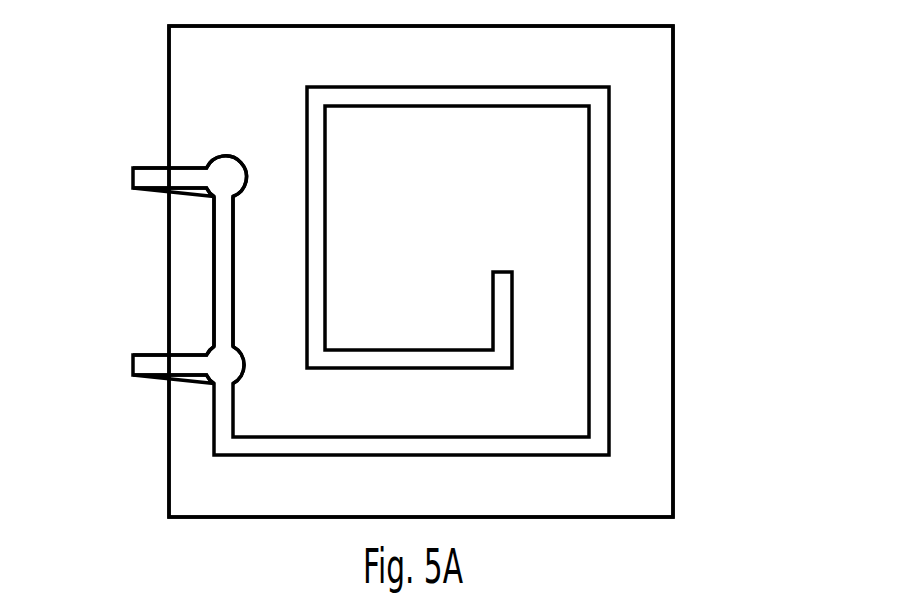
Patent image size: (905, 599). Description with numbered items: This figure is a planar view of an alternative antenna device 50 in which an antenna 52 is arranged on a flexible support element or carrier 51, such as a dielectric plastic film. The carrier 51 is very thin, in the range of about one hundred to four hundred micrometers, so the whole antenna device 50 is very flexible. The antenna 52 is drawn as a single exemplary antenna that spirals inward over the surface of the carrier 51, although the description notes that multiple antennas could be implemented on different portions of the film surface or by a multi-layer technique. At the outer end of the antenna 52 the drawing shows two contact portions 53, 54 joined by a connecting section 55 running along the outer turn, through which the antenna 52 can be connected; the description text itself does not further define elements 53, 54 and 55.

The antenna device 50 is at (712, 66).
The flexible support element or carrier 51 is at (653, 442).
The antenna 52 is at (600, 293).
The first contact pad 53 is at (133, 178).
The second contact pad 54 is at (143, 364).
The connecting strip 55 is at (218, 276).